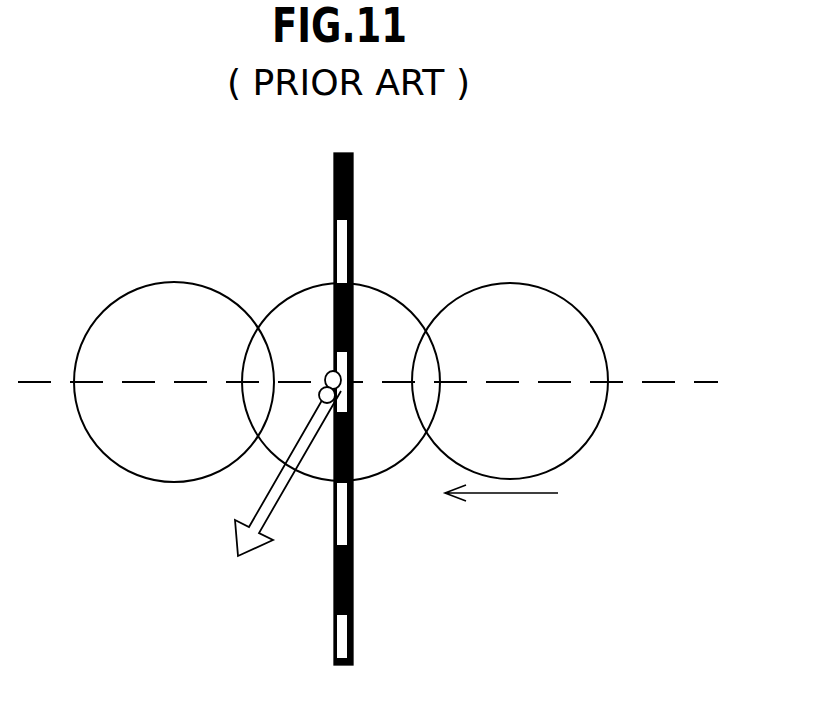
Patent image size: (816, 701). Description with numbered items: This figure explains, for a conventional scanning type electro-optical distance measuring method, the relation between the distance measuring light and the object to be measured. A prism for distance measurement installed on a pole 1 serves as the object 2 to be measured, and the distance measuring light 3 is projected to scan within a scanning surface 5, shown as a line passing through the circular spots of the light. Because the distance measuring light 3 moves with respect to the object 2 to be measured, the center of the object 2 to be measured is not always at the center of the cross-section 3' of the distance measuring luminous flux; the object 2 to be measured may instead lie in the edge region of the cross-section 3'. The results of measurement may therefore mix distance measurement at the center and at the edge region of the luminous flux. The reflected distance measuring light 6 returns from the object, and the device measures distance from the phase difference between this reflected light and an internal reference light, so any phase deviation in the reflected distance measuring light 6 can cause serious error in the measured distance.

The pole 1 is at (353, 202).
The object to be measured 2 is at (346, 397).
The distance measuring light 3 is at (341, 360).
The cross-section of the distance measuring luminous flux 3' is at (187, 357).
The scanning surface 5 is at (37, 381).
The reflected distance measuring light 6 is at (275, 505).